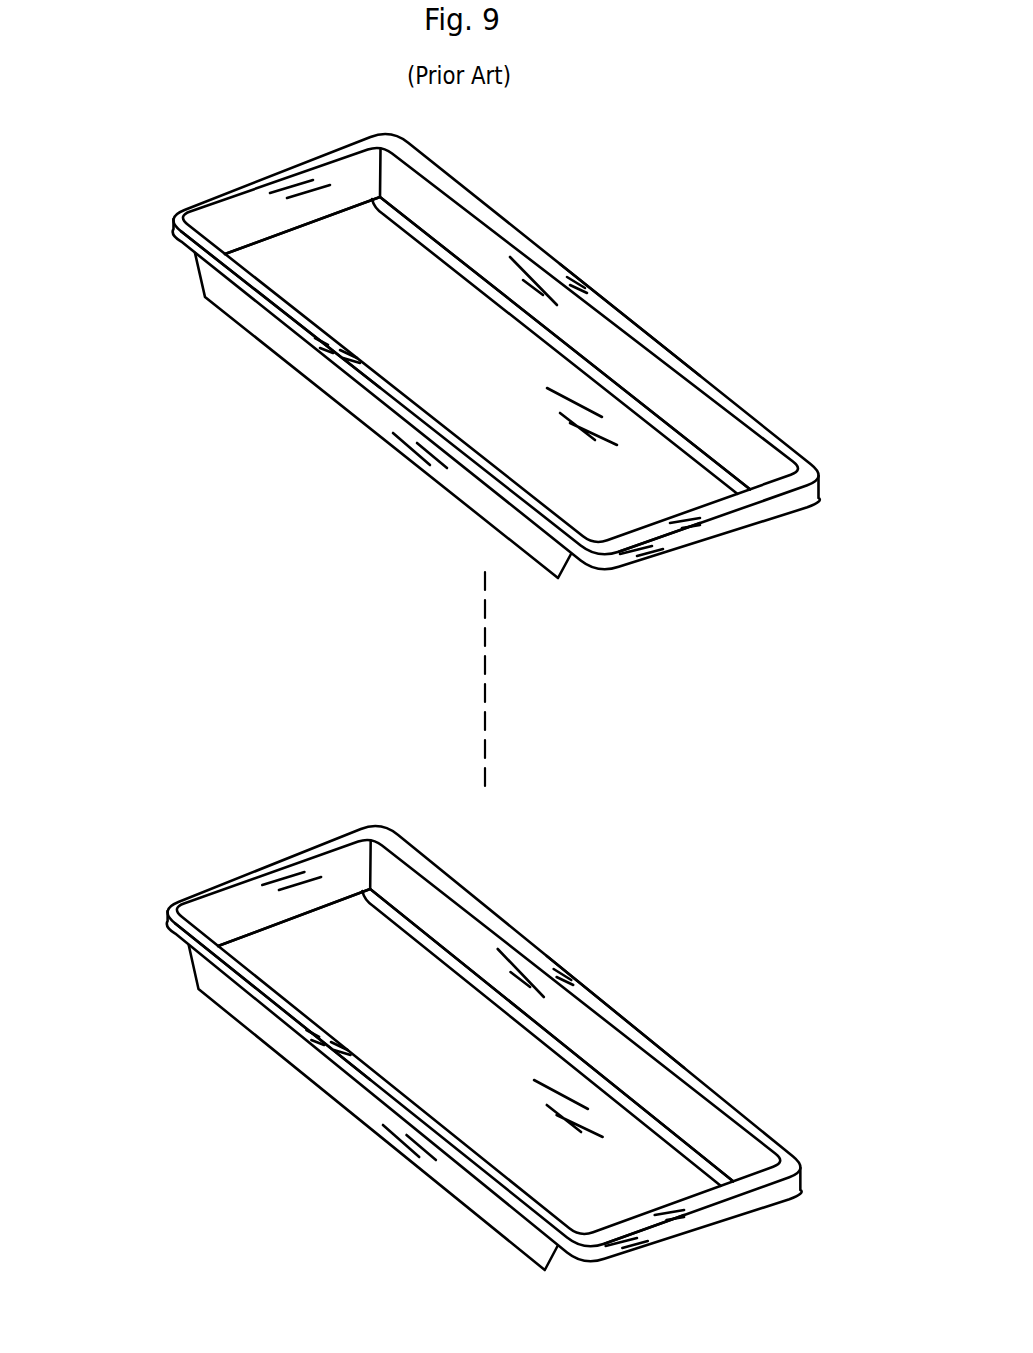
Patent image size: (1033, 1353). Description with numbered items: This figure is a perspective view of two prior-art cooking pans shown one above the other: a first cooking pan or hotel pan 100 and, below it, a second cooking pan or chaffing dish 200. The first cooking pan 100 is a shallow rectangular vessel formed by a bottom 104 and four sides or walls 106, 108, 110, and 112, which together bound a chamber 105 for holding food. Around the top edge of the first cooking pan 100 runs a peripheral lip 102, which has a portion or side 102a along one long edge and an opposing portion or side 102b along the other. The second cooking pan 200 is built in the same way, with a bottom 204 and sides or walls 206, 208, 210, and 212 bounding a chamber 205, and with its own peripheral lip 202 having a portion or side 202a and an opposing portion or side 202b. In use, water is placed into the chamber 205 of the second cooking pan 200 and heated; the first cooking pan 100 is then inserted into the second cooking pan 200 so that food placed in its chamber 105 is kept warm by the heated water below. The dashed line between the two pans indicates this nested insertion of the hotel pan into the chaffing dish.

The first cooking pan or hotel pan 100 is at (576, 196).
The peripheral lip 102 is at (362, 380).
The portion or side of the peripheral lip 102a is at (297, 340).
The opposing portion or side of the peripheral lip 102b is at (612, 301).
The bottom 104 is at (478, 383).
The chamber 105 is at (378, 305).
The side or wall 106 is at (460, 218).
The side or wall 108 is at (255, 207).
The side or wall 110 is at (373, 418).
The side or wall 112 is at (693, 518).
The second cooking pan or chaffing dish 200 is at (567, 927).
The peripheral lip 202 is at (343, 1067).
The portion or side of the peripheral lip 202a is at (392, 1107).
The opposing portion or side of the peripheral lip 202b is at (627, 1003).
The bottom 204 is at (486, 1082).
The chamber 205 is at (352, 950).
The side or wall 206 is at (457, 925).
The side or wall 208 is at (240, 903).
The side or wall 210 is at (428, 1162).
The side or wall 212 is at (648, 1214).